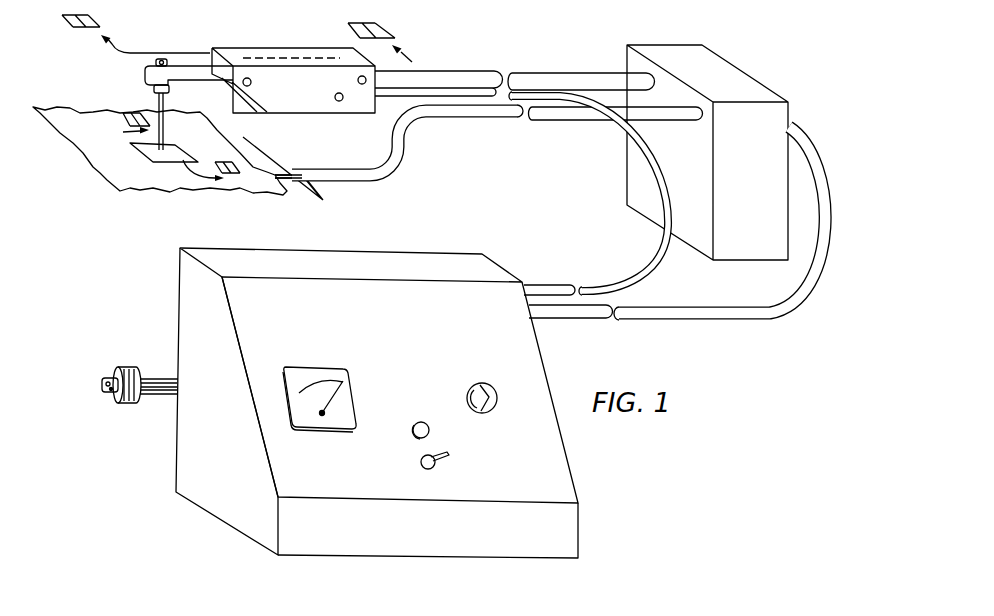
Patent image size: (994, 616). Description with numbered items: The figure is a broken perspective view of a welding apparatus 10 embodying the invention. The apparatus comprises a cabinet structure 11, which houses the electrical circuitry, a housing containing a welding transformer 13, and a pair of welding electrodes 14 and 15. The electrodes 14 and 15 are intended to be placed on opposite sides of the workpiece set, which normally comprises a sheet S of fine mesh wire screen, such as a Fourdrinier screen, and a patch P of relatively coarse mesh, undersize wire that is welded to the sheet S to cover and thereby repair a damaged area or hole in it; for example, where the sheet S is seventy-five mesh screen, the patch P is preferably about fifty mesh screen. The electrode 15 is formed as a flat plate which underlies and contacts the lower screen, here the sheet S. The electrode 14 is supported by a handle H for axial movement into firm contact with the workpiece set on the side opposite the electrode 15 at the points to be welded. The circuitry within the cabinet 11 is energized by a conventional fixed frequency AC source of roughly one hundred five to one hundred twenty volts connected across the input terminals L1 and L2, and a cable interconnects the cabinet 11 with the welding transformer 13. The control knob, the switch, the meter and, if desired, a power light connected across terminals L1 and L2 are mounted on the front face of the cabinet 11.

The welding apparatus 10 is at (112, 262).
The cabinet structure 11 is at (187, 307).
The welding transformer 13 is at (740, 88).
The welding electrode 14 is at (157, 96).
The welding electrode 15 is at (268, 163).
The handle H is at (250, 47).
The patch P is at (132, 152).
The sheet S is at (143, 181).
The input terminal L1 is at (107, 377).
The input terminal L2 is at (112, 393).